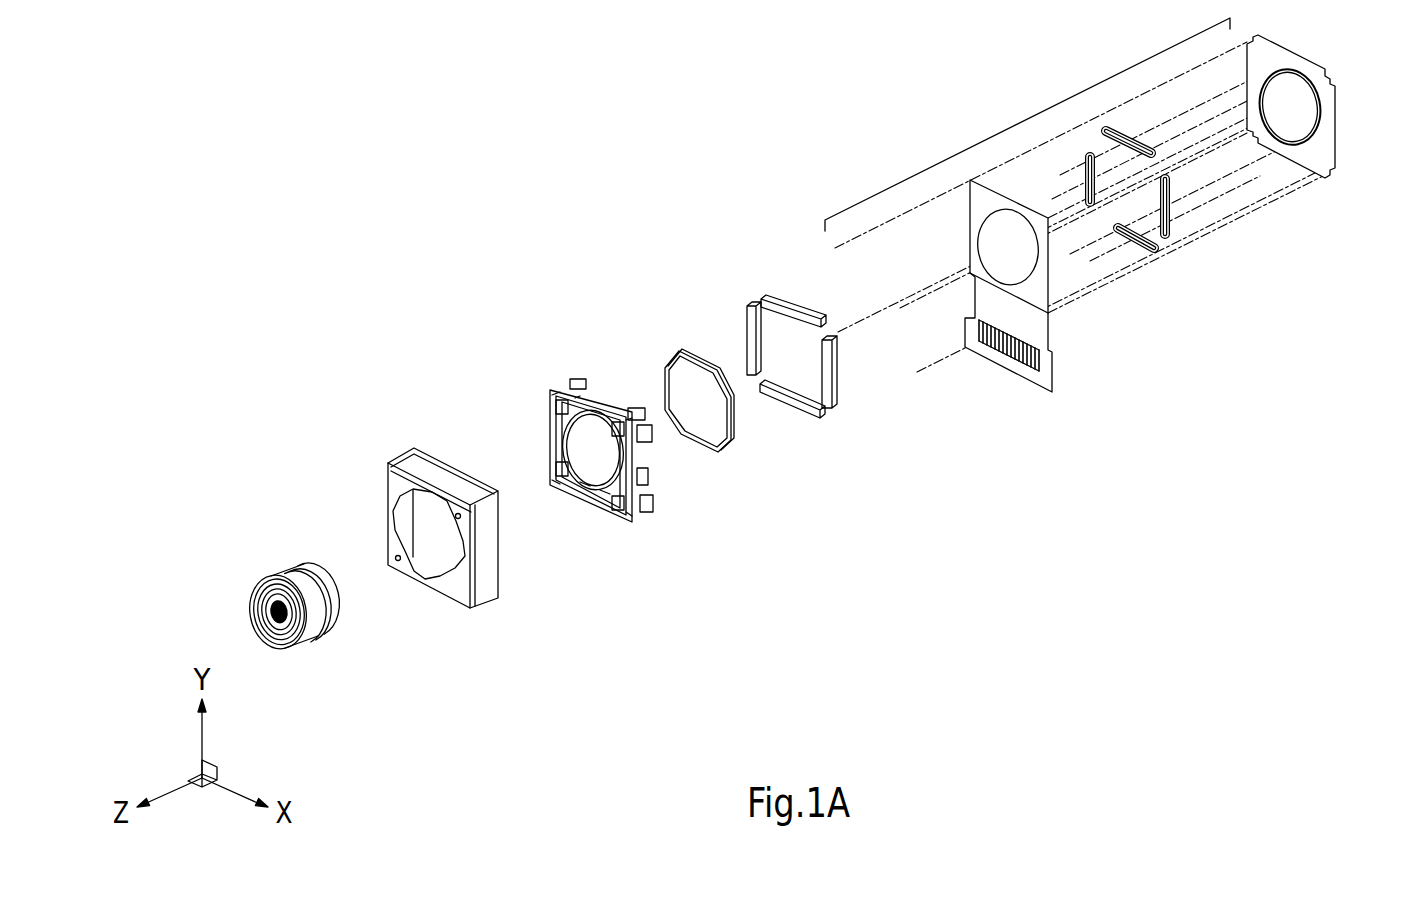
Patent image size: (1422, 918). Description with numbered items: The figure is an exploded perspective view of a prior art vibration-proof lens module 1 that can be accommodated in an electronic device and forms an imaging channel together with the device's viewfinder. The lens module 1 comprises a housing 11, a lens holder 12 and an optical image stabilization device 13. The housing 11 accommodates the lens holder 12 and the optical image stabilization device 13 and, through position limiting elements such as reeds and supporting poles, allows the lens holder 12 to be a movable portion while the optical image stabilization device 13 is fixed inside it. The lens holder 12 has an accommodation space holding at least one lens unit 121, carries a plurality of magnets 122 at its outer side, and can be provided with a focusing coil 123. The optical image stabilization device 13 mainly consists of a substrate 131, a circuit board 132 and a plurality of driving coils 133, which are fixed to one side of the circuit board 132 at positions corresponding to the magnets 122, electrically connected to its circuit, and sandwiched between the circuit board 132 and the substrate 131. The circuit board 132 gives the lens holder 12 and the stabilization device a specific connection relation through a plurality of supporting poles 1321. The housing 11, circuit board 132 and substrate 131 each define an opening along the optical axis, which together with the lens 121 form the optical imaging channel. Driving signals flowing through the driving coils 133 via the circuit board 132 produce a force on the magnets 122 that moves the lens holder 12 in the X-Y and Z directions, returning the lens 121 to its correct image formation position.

The lens module 1 is at (647, 46).
The housing 11 is at (488, 587).
The lens holder 12 is at (637, 512).
The lens unit 121 is at (310, 637).
The magnets 122 is at (818, 416).
The focusing coil 123 is at (718, 452).
The optical image stabilization device 13 is at (1026, 104).
The substrate 131 is at (1328, 140).
The circuit board 132 is at (1026, 319).
The supporting poles 1321 is at (906, 378).
The driving coils 133 is at (1158, 252).